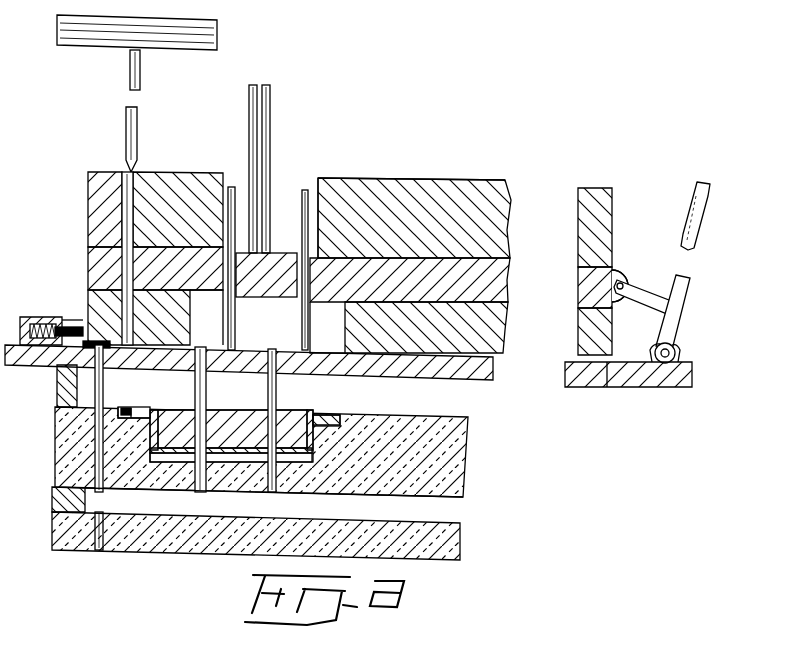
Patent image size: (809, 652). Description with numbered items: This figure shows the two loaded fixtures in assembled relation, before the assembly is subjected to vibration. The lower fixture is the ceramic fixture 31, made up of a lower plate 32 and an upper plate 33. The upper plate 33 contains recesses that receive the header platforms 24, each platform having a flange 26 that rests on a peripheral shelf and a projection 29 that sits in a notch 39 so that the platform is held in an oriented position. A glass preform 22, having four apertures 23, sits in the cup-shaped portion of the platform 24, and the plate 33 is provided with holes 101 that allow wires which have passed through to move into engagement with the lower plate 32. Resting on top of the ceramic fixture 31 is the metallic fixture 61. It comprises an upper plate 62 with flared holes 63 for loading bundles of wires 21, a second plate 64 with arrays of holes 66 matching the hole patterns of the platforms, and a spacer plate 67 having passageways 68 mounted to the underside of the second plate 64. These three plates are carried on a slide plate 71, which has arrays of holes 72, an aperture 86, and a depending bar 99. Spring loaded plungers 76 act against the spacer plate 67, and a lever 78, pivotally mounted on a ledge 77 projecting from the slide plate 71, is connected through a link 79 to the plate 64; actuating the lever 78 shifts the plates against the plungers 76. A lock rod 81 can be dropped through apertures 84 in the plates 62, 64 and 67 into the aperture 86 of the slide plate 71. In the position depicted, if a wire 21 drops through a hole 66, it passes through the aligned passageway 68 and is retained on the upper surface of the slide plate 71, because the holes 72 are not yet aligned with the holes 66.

The lock rod 81 is at (141, 73).
The apertures 84 is at (134, 170).
The wires 21 is at (278, 96).
The holes 63 is at (318, 178).
The holes 66 is at (293, 300).
The metallic fixture 61 is at (493, 178).
The upper plate 62 is at (578, 216).
The second plate 64 is at (578, 277).
The spacer plate 67 is at (578, 326).
The lever 78 is at (690, 214).
The link 79 is at (645, 300).
The ledge 77 is at (692, 381).
The slide plate 71 is at (493, 370).
The spring loaded plungers 76 is at (72, 322).
The depending bar 99 is at (57, 388).
The ceramic fixture 31 is at (490, 459).
The upper plate 33 is at (462, 481).
The header platform 24 is at (330, 412).
The glass preform 22 is at (175, 410).
The passageways 68 is at (324, 353).
The notches 39 is at (129, 408).
The flange 26 is at (143, 410).
The projection 29 is at (131, 413).
The aperture 86 is at (100, 367).
The holes 72 is at (268, 372).
The apertures 23 is at (277, 410).
The holes 101 is at (273, 491).
The lower plate 32 is at (460, 542).